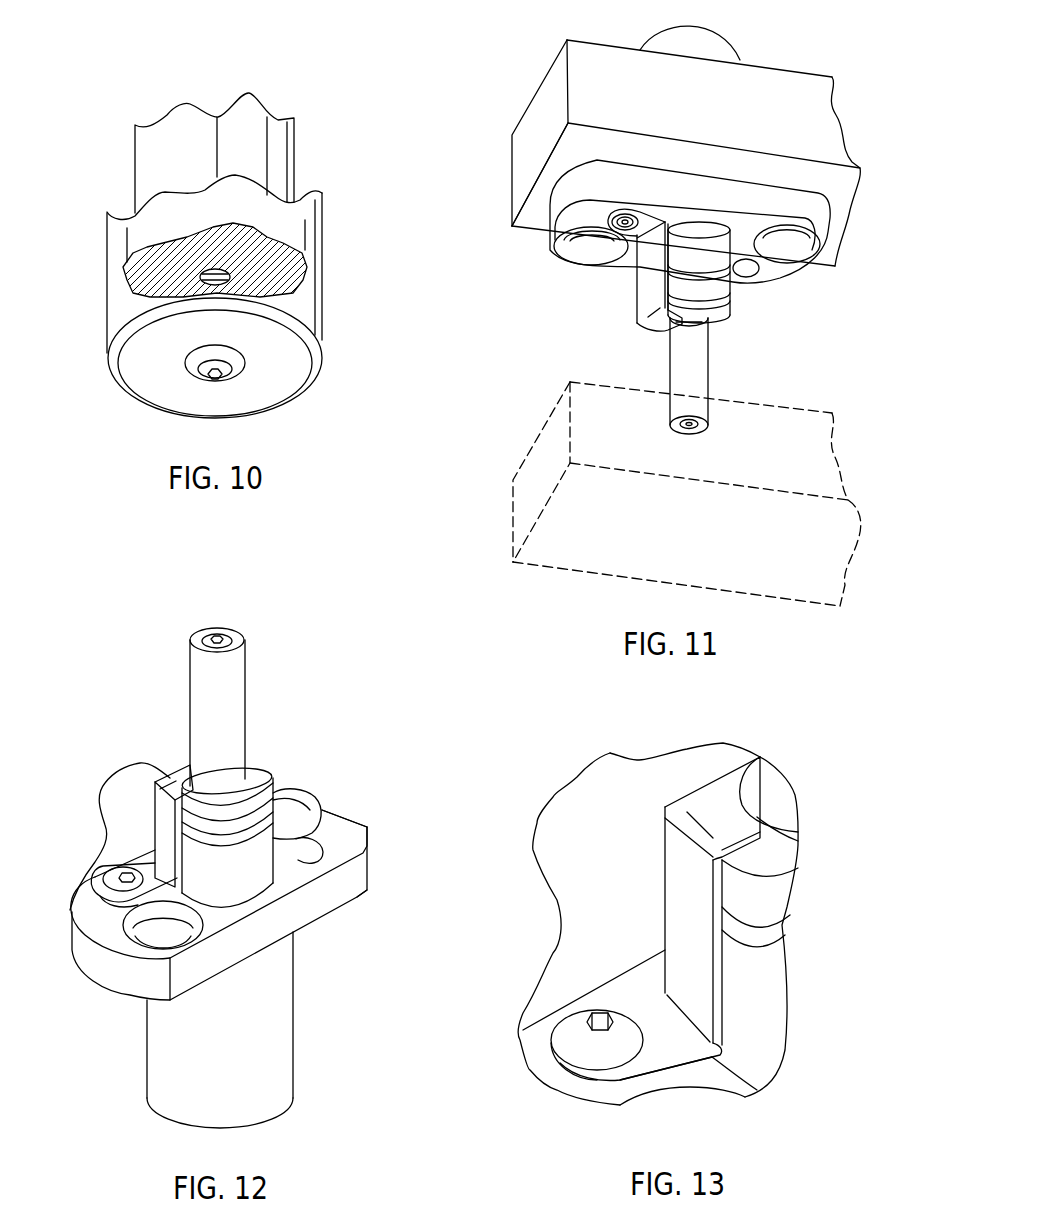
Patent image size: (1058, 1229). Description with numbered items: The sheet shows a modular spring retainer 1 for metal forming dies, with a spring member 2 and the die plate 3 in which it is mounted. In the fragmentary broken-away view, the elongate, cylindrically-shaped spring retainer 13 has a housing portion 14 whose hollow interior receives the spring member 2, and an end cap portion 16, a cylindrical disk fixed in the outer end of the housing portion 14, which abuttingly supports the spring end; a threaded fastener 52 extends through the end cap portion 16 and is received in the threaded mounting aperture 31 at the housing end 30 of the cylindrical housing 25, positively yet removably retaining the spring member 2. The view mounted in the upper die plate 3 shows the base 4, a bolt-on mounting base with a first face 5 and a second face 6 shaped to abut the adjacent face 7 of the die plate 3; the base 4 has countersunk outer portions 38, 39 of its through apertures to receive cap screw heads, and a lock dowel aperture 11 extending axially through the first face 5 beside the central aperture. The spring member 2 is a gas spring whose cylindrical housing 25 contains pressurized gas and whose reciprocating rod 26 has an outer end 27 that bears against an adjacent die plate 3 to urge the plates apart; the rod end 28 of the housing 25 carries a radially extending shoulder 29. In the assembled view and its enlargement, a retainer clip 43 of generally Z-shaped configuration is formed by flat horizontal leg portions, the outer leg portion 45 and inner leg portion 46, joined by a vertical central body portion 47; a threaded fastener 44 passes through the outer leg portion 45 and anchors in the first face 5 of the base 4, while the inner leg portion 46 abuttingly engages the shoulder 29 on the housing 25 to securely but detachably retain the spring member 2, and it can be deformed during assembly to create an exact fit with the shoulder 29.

In FIG. 12, the modular spring retainer 1 is at (139, 667).
In FIG. 10, the spring member 2 is at (135, 154).
In FIG. 11, the spring member 2 is at (733, 333).
In FIG. 12, the spring member 2 is at (186, 758).
In FIG. 13, the spring member 2 is at (739, 766).
In FIG. 11, the die plate 3 is at (512, 137).
In FIG. 11, the base 4 is at (557, 253).
In FIG. 12, the base 4 is at (83, 885).
In FIG. 13, the base 4 is at (628, 968).
In FIG. 12, the first face 5 is at (365, 830).
In FIG. 13, the first face 5 is at (650, 978).
In FIG. 12, the second face 6 is at (353, 910).
In FIG. 11, the adjacent face 7 is at (532, 213).
In FIG. 11, the lock dowel aperture 11 is at (743, 278).
In FIG. 12, the lock dowel aperture 11 is at (347, 837).
In FIG. 10, the spring retainer 13 is at (107, 333).
In FIG. 12, the spring retainer 13 is at (147, 1028).
In FIG. 10, the housing portion 14 is at (123, 233).
In FIG. 12, the housing portion 14 is at (270, 1030).
In FIG. 10, the end cap portion 16 is at (152, 373).
In FIG. 11, the cylindrical housing 25 is at (702, 245).
In FIG. 12, the cylindrical housing 25 is at (255, 868).
In FIG. 13, the cylindrical housing 25 is at (770, 1002).
In FIG. 11, the reciprocating rod 26 is at (697, 360).
In FIG. 12, the reciprocating rod 26 is at (237, 702).
In FIG. 11, the outer end 27 is at (710, 410).
In FIG. 12, the outer end 27 is at (230, 633).
In FIG. 11, the rod end 28 is at (677, 287).
In FIG. 12, the rod end 28 is at (263, 812).
In FIG. 13, the rod end 28 is at (765, 895).
In FIG. 11, the shoulder 29 is at (722, 332).
In FIG. 12, the shoulder 29 is at (260, 777).
In FIG. 13, the shoulder 29 is at (730, 780).
In FIG. 10, the housing end 30 is at (277, 277).
In FIG. 10, the threaded mounting aperture 31 is at (228, 273).
In FIG. 12, the countersunk outer portion 38 is at (307, 810).
In FIG. 11, the countersunk outer portion 39 is at (572, 250).
In FIG. 12, the countersunk outer portion 39 is at (125, 912).
In FIG. 11, the retainer clip 43 is at (635, 313).
In FIG. 12, the retainer clip 43 is at (158, 777).
In FIG. 13, the retainer clip 43 is at (662, 805).
In FIG. 11, the threaded fastener 44 is at (610, 220).
In FIG. 12, the threaded fastener 44 is at (133, 872).
In FIG. 13, the threaded fastener 44 is at (578, 1030).
In FIG. 11, the outer leg portion 45 is at (650, 212).
In FIG. 12, the outer leg portion 45 is at (147, 873).
In FIG. 13, the outer leg portion 45 is at (642, 1013).
In FIG. 11, the inner leg portion 46 is at (652, 327).
In FIG. 12, the inner leg portion 46 is at (175, 787).
In FIG. 13, the inner leg portion 46 is at (710, 810).
In FIG. 11, the vertical central body portion 47 is at (647, 270).
In FIG. 12, the vertical central body portion 47 is at (155, 830).
In FIG. 13, the vertical central body portion 47 is at (683, 880).
In FIG. 10, the threaded fastener 52 is at (238, 373).